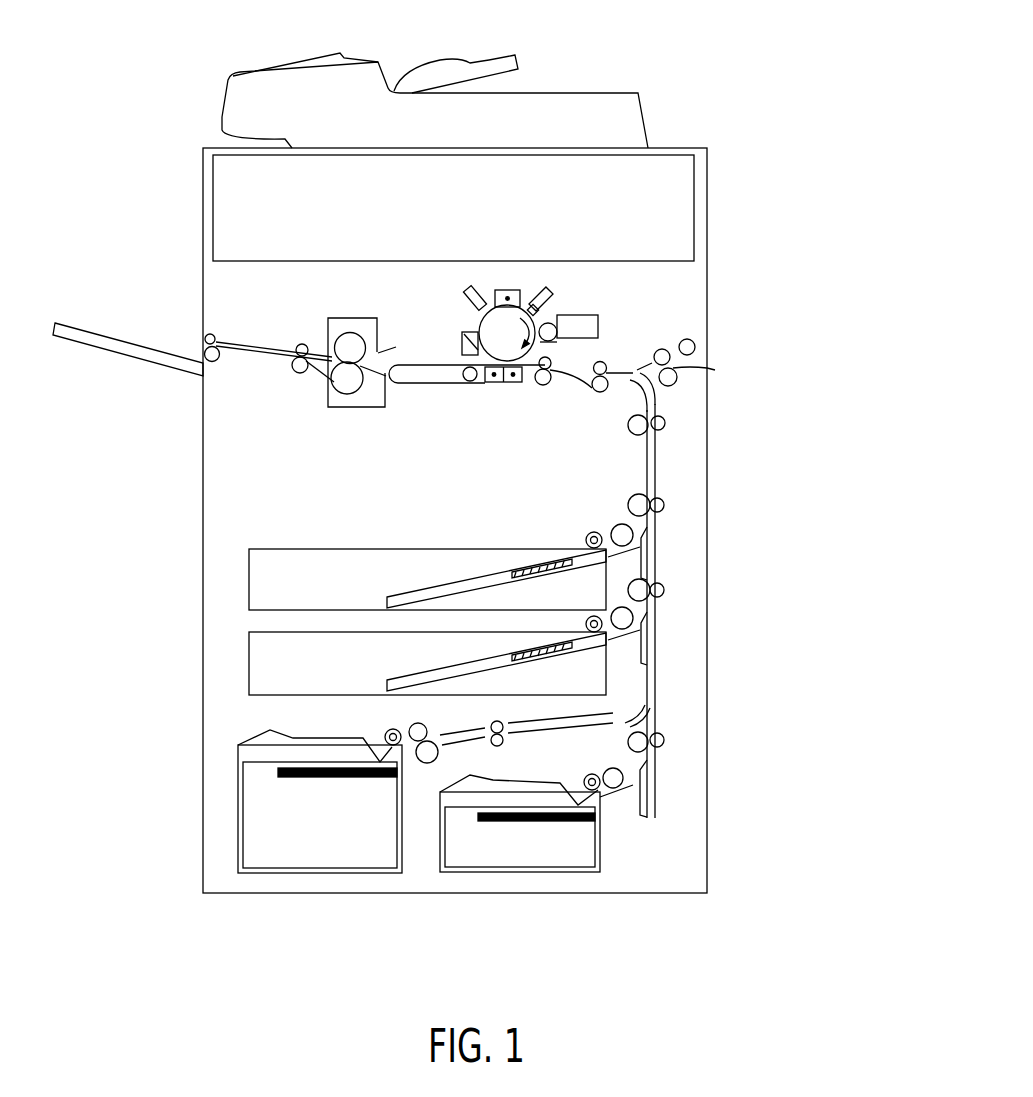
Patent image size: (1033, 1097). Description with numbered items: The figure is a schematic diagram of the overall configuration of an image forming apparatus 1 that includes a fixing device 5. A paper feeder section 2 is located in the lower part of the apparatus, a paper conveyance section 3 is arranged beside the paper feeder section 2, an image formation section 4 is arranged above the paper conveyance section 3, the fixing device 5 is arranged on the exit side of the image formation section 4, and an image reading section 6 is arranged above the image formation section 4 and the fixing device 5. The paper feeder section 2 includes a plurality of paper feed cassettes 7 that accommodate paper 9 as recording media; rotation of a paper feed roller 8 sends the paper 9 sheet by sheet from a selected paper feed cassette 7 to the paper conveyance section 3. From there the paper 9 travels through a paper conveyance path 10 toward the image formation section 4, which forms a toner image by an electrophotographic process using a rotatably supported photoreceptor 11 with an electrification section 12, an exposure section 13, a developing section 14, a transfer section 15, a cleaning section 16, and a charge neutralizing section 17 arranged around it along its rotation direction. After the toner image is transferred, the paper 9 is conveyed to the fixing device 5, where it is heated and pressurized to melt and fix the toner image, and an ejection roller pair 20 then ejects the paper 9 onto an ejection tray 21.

The image forming apparatus 1 is at (672, 68).
The paper feeder section 2 is at (262, 714).
The paper conveyance section 3 is at (600, 578).
The image formation section 4 is at (421, 305).
The fixing device 5 is at (354, 412).
The image reading section 6 is at (686, 218).
The paper feed cassette 7 is at (252, 572).
The paper feed roller 8 is at (592, 532).
The paper 9 is at (482, 575).
The paper conveyance path 10 is at (656, 452).
The photoreceptor 11 is at (480, 322).
The electrification section 12 is at (512, 288).
The exposure section 13 is at (548, 298).
The developing section 14 is at (598, 328).
The transfer section 15 is at (498, 383).
The cleaning section 16 is at (462, 343).
The charge neutralizing section 17 is at (466, 291).
The ejection roller pair 20 is at (190, 338).
The ejection tray 21 is at (92, 350).